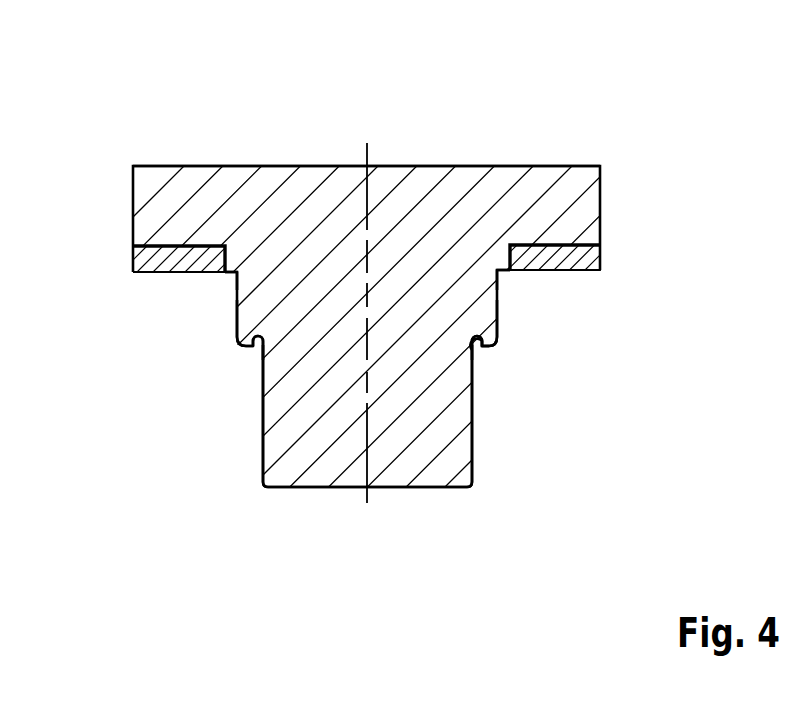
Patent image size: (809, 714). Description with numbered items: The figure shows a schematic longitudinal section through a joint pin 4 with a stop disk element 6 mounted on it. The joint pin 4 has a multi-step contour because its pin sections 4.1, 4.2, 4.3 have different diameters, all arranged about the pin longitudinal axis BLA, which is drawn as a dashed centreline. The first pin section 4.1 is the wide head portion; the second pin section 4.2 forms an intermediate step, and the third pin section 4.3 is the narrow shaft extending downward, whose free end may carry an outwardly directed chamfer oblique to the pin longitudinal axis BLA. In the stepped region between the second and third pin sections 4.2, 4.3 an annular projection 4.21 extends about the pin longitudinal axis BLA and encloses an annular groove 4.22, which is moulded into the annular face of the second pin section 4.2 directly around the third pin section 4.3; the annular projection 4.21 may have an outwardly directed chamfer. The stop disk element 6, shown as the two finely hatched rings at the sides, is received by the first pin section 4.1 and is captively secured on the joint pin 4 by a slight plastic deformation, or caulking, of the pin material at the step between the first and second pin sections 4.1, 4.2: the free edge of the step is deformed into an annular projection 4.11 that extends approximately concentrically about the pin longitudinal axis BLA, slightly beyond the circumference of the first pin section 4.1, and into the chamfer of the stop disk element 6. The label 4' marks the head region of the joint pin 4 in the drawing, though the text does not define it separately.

The joint pin 4 is at (402, 247).
The component body / head portion 4' is at (331, 124).
The first pin section 4.1 is at (224, 272).
The annular projection 4.11 is at (511, 272).
The second pin section 4.2 is at (237, 323).
The annular projection 4.21 is at (498, 345).
The annular groove 4.22 is at (485, 348).
The third pin section 4.3 is at (262, 405).
The stop disk element 6 is at (603, 262).
The pin longitudinal axis BLA is at (365, 348).